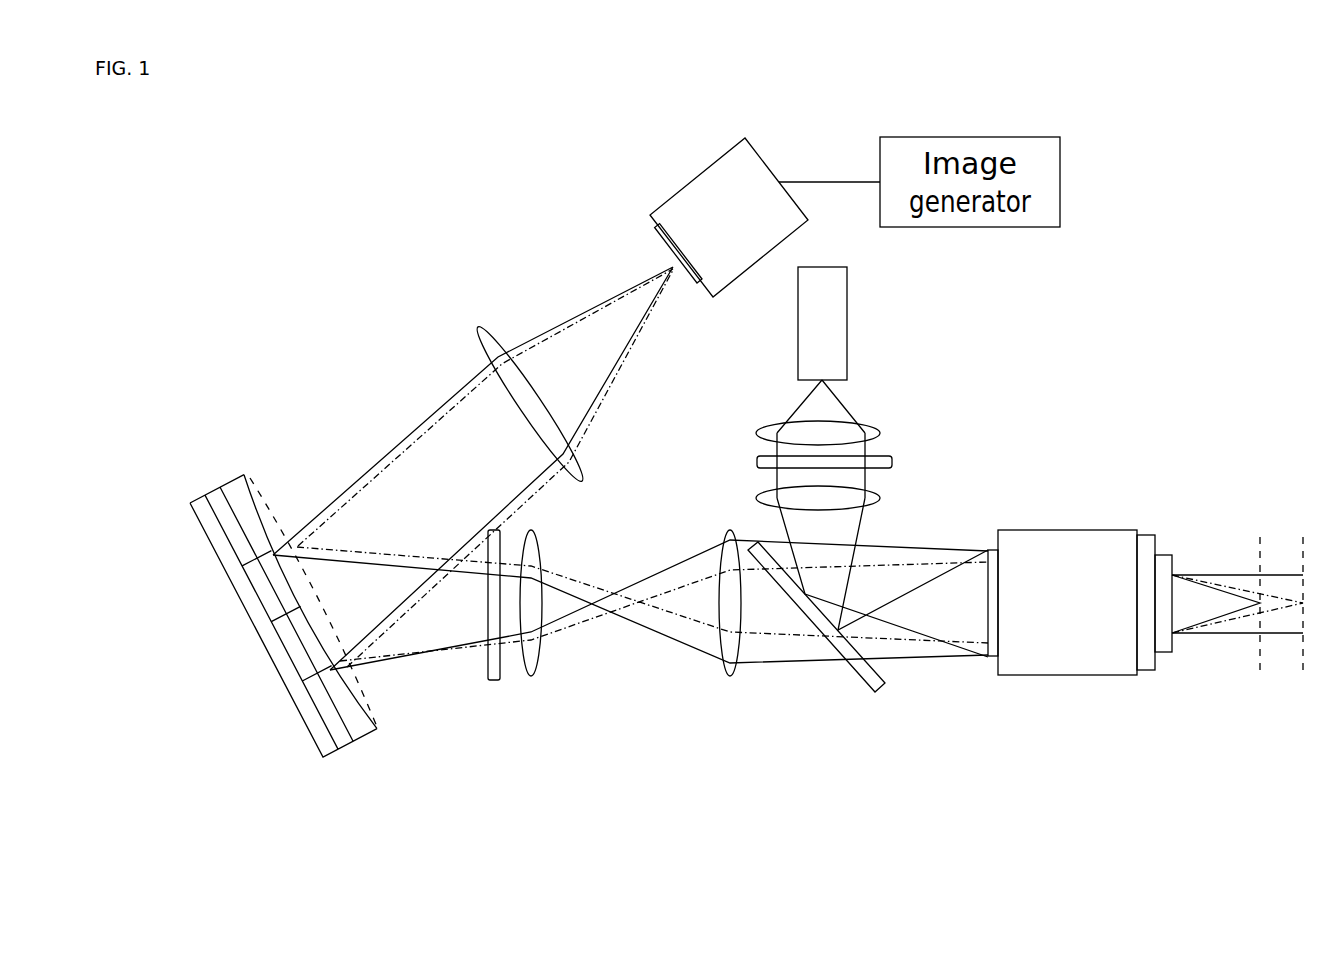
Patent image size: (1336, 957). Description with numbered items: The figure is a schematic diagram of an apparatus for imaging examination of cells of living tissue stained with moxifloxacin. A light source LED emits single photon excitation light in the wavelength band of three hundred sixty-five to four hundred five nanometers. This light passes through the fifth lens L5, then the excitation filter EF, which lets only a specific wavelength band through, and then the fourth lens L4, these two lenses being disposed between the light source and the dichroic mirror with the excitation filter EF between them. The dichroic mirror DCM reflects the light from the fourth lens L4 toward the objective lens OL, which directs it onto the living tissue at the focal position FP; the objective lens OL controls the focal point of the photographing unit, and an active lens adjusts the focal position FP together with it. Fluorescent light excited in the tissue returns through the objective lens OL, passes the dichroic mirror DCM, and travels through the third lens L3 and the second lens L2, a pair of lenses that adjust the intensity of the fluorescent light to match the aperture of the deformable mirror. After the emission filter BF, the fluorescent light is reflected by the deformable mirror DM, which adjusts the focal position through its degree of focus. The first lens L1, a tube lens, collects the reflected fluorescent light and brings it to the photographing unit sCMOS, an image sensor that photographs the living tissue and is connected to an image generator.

The deformable mirror DM is at (283, 616).
The first lens L1 is at (530, 381).
The photographing unit sCMOS is at (765, 217).
The light source LED is at (822, 323).
The fifth lens L5 is at (793, 431).
The excitation filter EF is at (849, 459).
The fourth lens L4 is at (793, 494).
The emission filter BF is at (495, 623).
The second lens L2 is at (539, 623).
The third lens L3 is at (722, 628).
The dichroic mirror DCM is at (816, 635).
The objective lens OL is at (1080, 627).
The focal position FP is at (1280, 572).